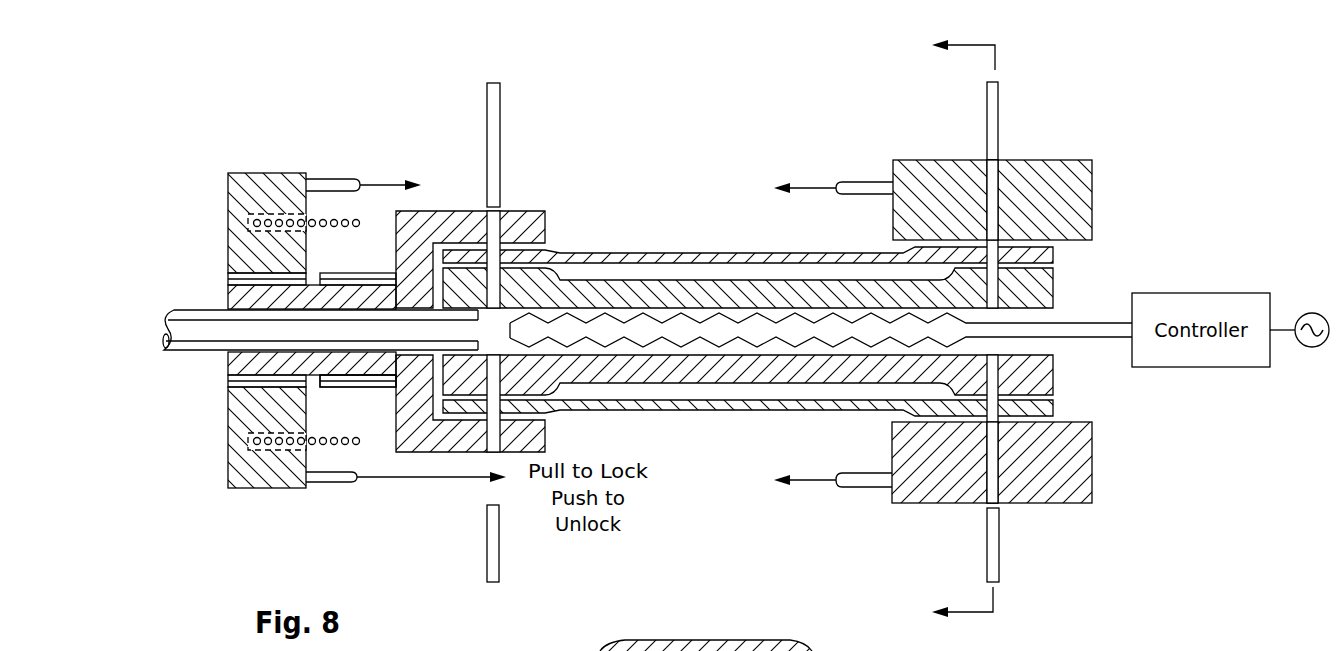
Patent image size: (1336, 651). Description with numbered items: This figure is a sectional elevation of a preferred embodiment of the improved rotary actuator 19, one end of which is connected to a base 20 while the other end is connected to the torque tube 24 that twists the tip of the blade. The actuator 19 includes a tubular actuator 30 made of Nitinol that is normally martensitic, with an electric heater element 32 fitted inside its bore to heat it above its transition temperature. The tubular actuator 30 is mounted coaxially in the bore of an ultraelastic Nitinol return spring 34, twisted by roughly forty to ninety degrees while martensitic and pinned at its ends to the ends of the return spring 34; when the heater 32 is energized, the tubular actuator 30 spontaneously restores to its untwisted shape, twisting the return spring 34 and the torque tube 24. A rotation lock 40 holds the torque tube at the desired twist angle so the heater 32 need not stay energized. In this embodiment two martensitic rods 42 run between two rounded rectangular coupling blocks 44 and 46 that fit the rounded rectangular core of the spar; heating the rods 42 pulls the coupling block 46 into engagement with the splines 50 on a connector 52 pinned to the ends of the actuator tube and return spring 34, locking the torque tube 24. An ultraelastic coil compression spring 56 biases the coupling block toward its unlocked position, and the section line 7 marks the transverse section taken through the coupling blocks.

The rotary actuator 19 is at (605, 208).
The base 20 is at (1052, 503).
The torque tube 24 is at (178, 353).
The tubular actuator 30 is at (690, 374).
The electric heater element 32 is at (918, 319).
The ultraelastic tubular return spring 34 is at (750, 253).
The rotation lock 40 is at (282, 165).
The martensitic rods 42 is at (868, 181).
The coupling block 44 is at (1042, 160).
The coupling block 46 is at (268, 489).
The splines 50 is at (350, 388).
The connector 52 is at (528, 211).
The coil compression spring 56 is at (333, 216).
The section line 7- 7 is at (952, 329).